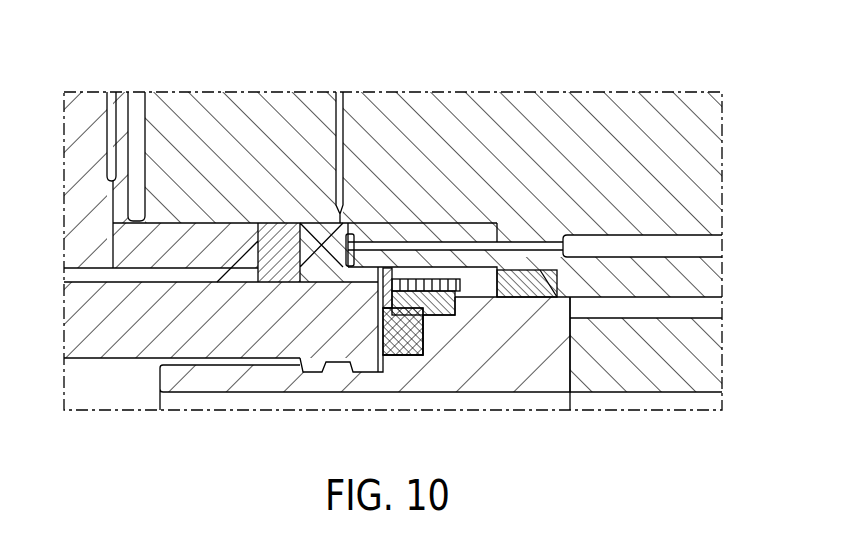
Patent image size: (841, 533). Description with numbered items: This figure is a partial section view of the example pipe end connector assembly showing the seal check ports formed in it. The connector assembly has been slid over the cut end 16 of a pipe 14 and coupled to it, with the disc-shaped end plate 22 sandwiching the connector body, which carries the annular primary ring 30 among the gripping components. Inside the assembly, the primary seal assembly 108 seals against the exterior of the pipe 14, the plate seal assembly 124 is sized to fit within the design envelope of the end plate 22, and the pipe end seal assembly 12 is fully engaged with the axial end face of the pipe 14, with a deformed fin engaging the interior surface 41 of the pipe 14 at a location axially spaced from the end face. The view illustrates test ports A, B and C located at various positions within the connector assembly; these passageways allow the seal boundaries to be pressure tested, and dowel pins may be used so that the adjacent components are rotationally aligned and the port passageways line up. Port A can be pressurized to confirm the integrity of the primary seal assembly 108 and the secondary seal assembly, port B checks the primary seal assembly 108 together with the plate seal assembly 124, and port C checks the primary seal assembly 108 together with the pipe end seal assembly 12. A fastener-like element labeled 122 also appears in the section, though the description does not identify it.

The pipe end seal assembly 12 is at (83, 385).
The pipe 14 is at (72, 330).
The cut end 16 is at (341, 330).
The end plate 22 is at (700, 102).
The primary ring 30 is at (82, 100).
The interior surface of the pipe 41 is at (108, 358).
The primary seal assembly 108 is at (260, 187).
The fastener 122 is at (376, 384).
The plate seal assembly 124 is at (520, 305).
The test port A is at (112, 93).
The test port B is at (340, 95).
The test port C is at (708, 247).